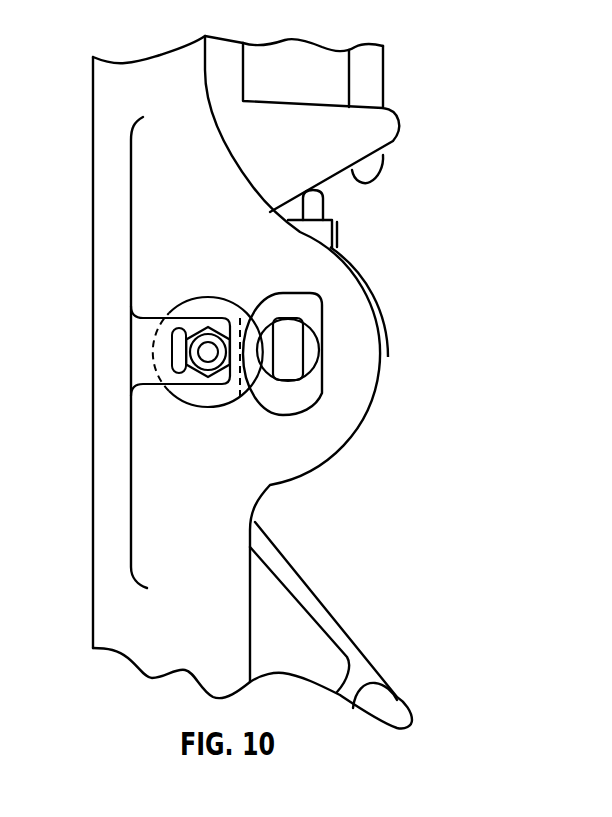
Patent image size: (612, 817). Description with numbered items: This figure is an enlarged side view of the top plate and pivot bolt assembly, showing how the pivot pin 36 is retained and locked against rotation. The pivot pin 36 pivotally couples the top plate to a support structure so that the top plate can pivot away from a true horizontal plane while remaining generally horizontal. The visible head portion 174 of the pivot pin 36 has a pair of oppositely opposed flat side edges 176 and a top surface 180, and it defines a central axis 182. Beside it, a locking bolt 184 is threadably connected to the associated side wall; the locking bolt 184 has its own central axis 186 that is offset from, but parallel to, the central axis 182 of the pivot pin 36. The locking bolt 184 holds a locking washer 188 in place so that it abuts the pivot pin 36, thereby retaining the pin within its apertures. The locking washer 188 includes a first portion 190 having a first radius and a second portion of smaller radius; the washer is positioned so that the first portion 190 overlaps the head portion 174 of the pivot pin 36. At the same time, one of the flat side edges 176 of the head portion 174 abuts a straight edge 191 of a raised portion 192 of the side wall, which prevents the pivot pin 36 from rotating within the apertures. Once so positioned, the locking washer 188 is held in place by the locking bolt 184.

The pivot pin 36 is at (332, 380).
The head portion 174 is at (305, 290).
The flat side edges 176 is at (327, 318).
The top surface 180 is at (307, 397).
The central axis 182 is at (297, 348).
The locking bolt 184 is at (186, 335).
The central axis 186 is at (203, 356).
The locking washer 188 is at (169, 309).
The first portion 190 is at (230, 400).
The straight edge 191 is at (238, 329).
The raised portion 192 is at (218, 378).